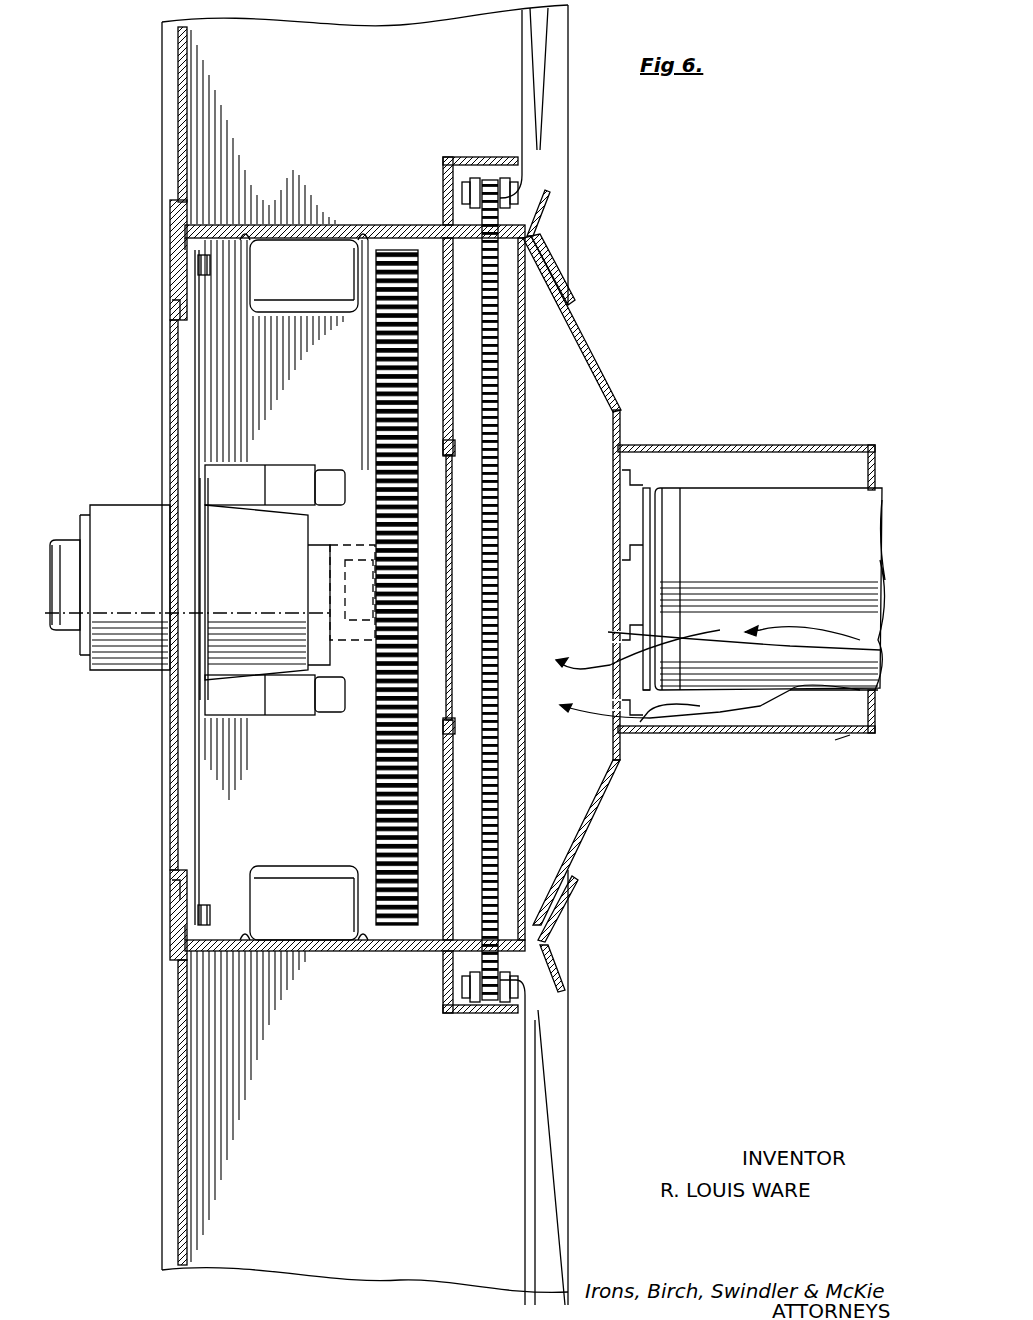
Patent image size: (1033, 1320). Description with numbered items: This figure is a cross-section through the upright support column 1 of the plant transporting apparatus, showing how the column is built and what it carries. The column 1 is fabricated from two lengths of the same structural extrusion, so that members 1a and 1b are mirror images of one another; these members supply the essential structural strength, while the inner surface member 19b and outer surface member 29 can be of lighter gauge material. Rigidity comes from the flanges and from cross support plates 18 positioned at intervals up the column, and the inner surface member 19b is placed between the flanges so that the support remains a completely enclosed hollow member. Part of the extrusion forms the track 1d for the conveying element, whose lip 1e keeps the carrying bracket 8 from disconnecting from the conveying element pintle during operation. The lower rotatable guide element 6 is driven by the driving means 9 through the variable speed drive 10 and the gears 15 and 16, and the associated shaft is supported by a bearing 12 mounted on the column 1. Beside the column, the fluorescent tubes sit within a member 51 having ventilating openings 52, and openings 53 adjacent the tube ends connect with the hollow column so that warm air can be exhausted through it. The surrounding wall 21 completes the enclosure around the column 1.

The pipe wall 21 is at (178, 110).
The column 1 is at (176, 884).
The extrusion member 1a is at (386, 226).
The extrusion member 1b is at (370, 951).
The track 1d is at (460, 162).
The lip 1e is at (546, 220).
The rotatable guide element 6 is at (500, 410).
The carrying bracket 8 is at (546, 1118).
The driving means 9 is at (162, 508).
The variable speed drive 10 is at (255, 464).
The bearing 12 is at (288, 656).
The gear 15 is at (360, 548).
The gear 16 is at (376, 768).
The cross support plates 18 is at (198, 344).
The inner surface member 19b is at (453, 510).
The outer surface member 29 is at (174, 388).
The member 51 is at (722, 442).
The ventilating openings 52 is at (852, 730).
The openings 53 is at (608, 678).